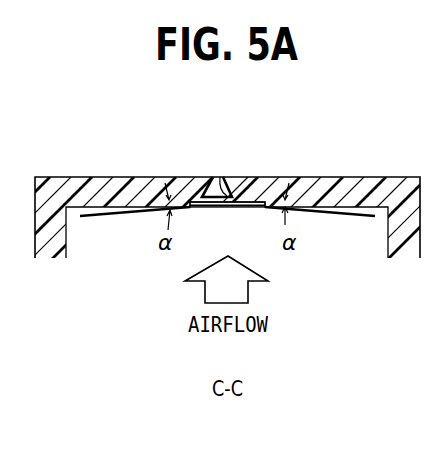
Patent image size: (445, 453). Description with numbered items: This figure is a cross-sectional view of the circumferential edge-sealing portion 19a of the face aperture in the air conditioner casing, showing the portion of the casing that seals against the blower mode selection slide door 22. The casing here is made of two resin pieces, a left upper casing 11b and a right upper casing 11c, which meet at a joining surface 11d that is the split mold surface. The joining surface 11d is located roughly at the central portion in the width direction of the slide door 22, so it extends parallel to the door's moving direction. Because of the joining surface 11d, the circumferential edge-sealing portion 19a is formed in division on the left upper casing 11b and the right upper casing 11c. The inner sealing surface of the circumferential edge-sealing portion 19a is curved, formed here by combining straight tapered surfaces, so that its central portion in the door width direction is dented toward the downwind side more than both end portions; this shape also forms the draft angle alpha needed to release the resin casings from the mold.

The left upper casing 11b is at (98, 178).
The right upper casing 11c is at (308, 178).
The joining surface 11d is at (213, 178).
The circumferential edge-sealing portion 19a is at (192, 210).
The blower mode selection slide door 22 is at (240, 215).